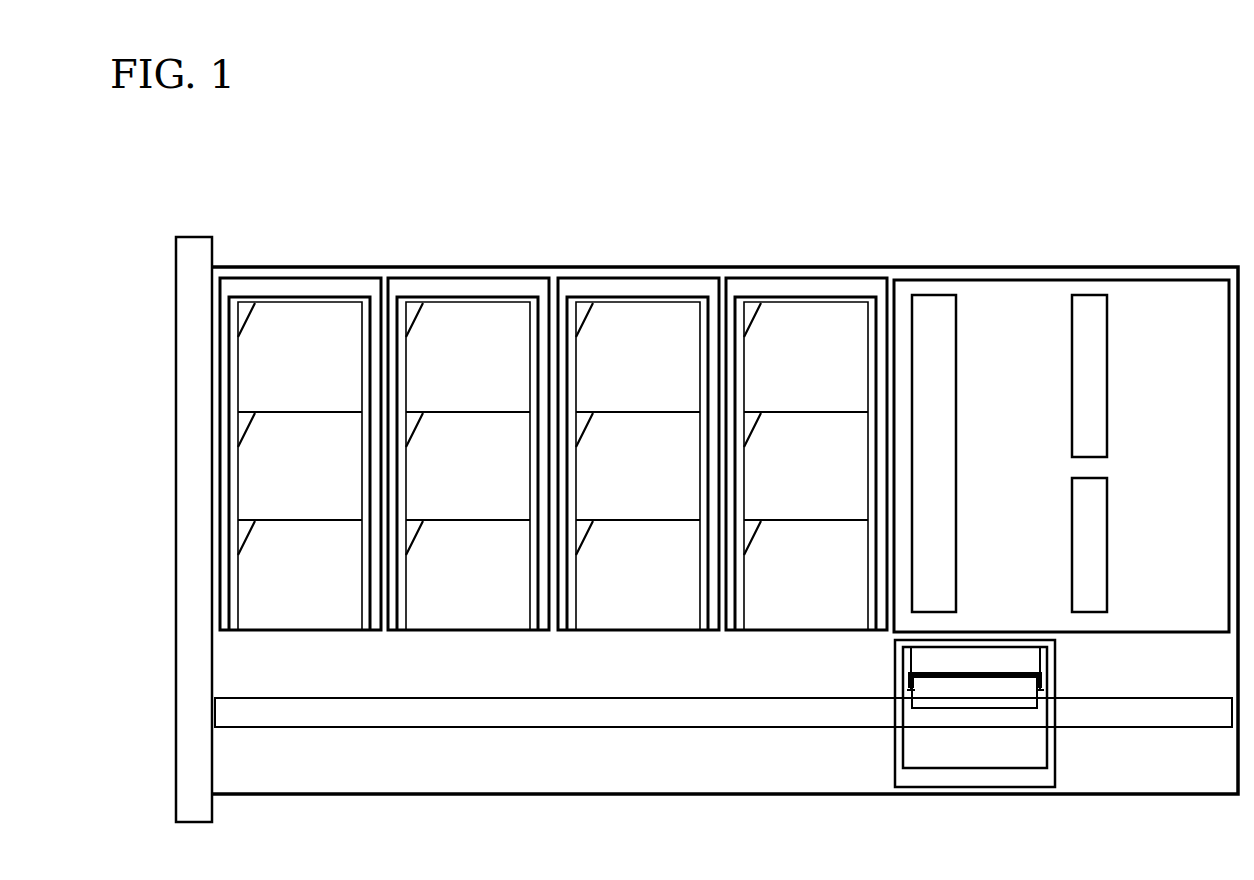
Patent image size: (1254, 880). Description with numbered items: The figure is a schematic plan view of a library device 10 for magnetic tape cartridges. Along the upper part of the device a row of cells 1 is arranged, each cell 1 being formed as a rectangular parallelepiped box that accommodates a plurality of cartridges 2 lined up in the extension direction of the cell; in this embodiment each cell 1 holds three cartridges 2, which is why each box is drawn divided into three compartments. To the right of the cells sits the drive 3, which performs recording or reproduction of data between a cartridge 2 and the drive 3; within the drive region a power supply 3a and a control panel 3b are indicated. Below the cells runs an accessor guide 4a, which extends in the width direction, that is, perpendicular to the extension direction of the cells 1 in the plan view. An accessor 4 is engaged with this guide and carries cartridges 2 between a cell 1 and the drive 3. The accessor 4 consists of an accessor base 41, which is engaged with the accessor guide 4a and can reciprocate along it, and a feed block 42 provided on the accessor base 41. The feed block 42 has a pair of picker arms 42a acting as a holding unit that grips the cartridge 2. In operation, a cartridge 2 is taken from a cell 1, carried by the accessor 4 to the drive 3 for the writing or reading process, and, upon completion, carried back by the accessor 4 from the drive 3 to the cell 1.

The library device 10 is at (1060, 125).
The cell 1 is at (362, 265).
The magnetic tape cartridge 2 is at (315, 447).
The drive 3 is at (1003, 265).
The power supply 3a is at (1107, 355).
The control panel 3b is at (1107, 535).
The accessor 4 is at (990, 800).
The accessor guide 4a is at (605, 729).
The accessor base 41 is at (892, 761).
The feed block 42 is at (948, 718).
The picker arm 42a is at (914, 655).